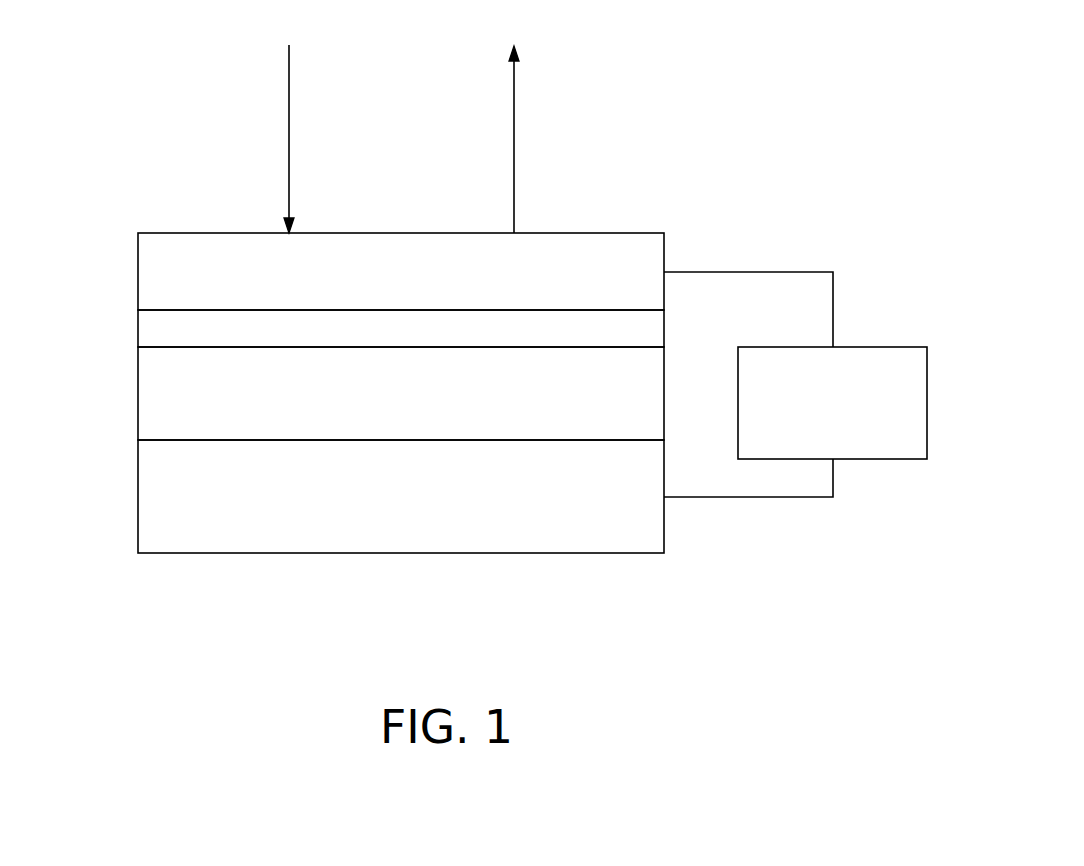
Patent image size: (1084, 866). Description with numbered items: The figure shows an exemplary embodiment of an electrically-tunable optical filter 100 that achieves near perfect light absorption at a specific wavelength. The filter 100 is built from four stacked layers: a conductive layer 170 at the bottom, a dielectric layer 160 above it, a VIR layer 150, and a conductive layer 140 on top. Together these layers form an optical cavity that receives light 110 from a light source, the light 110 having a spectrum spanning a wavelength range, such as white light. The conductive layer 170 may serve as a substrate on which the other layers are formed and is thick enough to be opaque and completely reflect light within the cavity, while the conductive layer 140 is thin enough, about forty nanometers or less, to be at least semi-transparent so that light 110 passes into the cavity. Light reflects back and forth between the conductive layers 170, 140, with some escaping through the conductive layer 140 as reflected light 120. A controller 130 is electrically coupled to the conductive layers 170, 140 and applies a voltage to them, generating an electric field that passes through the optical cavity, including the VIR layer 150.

The tunable optical filter 100 is at (134, 94).
The light 110 is at (289, 83).
The reflected light 120 is at (514, 83).
The controller 130 is at (757, 345).
The conductive layer 140 is at (138, 245).
The VIR layer 150 is at (138, 328).
The dielectric layer 160 is at (138, 403).
The conductive layer 170 is at (138, 497).